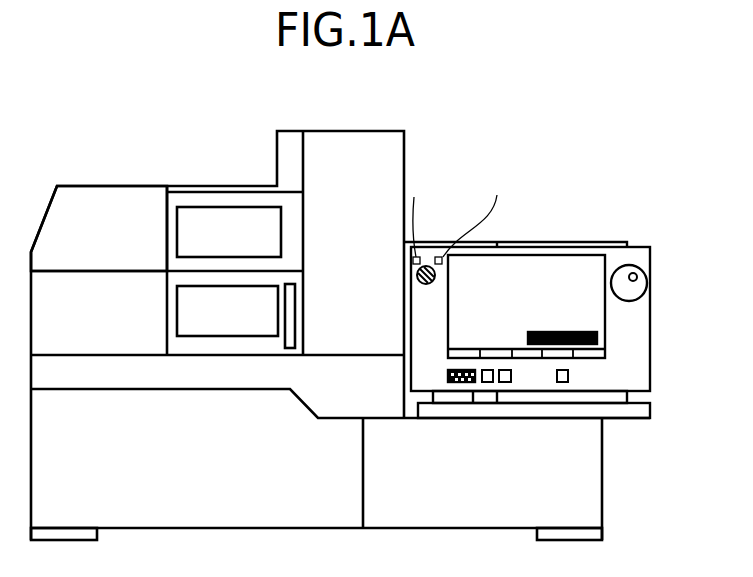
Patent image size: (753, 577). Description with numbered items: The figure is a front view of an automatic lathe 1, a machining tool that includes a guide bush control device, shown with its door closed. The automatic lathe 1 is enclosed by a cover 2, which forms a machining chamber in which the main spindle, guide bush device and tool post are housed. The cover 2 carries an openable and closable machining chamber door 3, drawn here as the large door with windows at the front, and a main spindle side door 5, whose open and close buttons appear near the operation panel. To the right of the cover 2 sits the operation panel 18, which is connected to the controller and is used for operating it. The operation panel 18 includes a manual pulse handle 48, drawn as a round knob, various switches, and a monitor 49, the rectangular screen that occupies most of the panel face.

The automatic lathe 1 is at (53, 176).
The cover 2 is at (115, 197).
The machining chamber door 3 is at (223, 200).
The main spindle side door 5 is at (438, 245).
The operation panel 18 is at (625, 373).
The manual pulse handle 48 is at (648, 283).
The monitor 49 is at (559, 273).